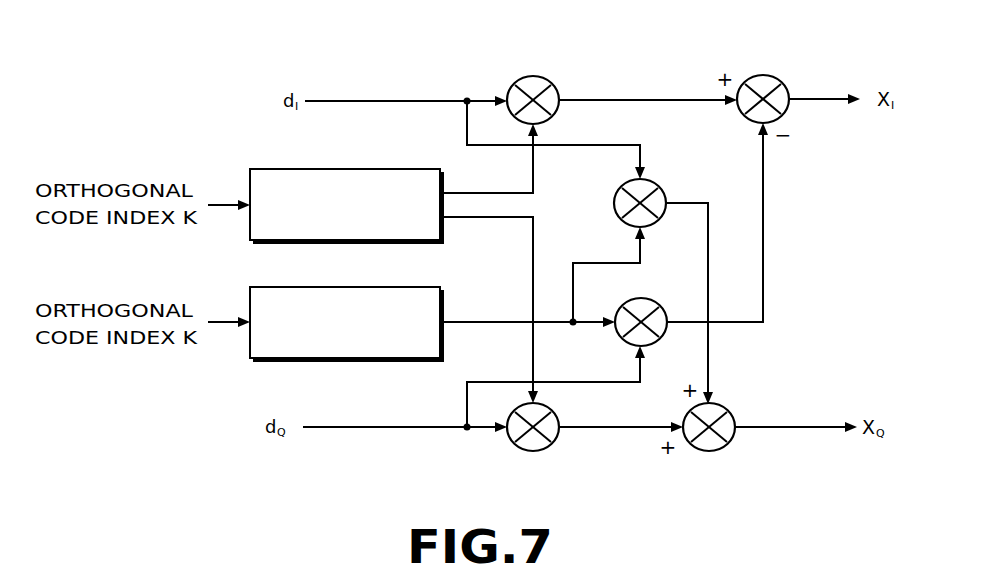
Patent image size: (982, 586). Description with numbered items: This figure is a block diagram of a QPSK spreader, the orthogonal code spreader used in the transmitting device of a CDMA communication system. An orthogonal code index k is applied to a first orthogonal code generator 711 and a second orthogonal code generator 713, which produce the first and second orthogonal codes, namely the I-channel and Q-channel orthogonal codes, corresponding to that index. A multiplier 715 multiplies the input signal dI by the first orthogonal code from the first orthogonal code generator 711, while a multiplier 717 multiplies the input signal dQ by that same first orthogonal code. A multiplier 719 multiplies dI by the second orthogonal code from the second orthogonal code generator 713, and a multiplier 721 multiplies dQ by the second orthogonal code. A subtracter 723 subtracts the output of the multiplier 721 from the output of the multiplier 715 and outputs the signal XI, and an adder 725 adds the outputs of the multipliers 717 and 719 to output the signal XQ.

The first orthogonal code generator 711 is at (374, 168).
The second orthogonal code generator 713 is at (374, 362).
The multiplier 715 is at (555, 83).
The multiplier 717 is at (556, 412).
The multiplier 719 is at (662, 185).
The multiplier 721 is at (669, 301).
The subtracter 723 is at (785, 82).
The adder 725 is at (735, 410).